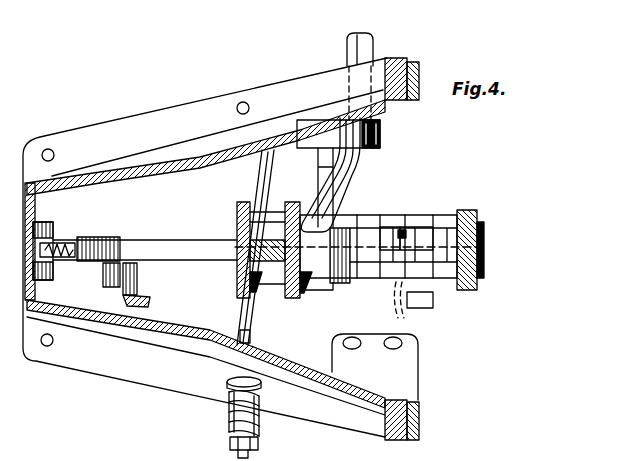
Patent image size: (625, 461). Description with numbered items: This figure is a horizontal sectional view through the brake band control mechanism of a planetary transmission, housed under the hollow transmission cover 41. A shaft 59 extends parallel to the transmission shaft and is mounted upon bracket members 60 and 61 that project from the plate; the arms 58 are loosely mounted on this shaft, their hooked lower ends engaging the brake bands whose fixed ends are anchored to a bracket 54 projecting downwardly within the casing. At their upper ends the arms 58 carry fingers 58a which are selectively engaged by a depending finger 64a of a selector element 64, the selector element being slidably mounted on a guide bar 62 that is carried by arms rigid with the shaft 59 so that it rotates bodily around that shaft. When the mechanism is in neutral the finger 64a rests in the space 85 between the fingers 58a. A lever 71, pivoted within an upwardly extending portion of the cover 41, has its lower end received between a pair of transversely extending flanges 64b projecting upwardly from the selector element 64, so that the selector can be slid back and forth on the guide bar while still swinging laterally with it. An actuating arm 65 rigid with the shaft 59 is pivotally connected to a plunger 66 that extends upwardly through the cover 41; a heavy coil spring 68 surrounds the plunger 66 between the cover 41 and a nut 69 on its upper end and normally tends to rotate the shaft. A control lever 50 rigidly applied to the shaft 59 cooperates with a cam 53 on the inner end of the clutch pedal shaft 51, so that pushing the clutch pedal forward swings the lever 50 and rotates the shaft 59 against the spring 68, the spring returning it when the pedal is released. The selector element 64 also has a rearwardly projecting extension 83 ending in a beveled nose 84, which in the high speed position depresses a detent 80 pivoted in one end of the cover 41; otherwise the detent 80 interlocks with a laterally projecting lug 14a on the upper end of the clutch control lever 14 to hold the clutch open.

The transmission cover 41 is at (190, 143).
The clutch pedal shaft 51 is at (372, 60).
The cam 53 is at (382, 142).
The control lever 50 is at (343, 180).
The lever 71 is at (333, 190).
The bracket member 61 is at (270, 190).
The actuating arm 65 is at (235, 322).
The selector element 64 is at (240, 212).
The depending finger 64a is at (340, 243).
The transversely extending flanges 64b is at (312, 297).
The extension 83 is at (176, 250).
The detent 80 is at (65, 243).
The beveled nose 84 is at (100, 240).
The laterally projecting lug 14a is at (122, 278).
The clutch control lever 14 is at (148, 298).
The bracket member 60 is at (480, 210).
The shaft 59 is at (486, 245).
The fingers 58a is at (427, 224).
The space 85 is at (410, 233).
The guide bar 62 is at (420, 258).
The arms 58 is at (399, 317).
The bracket 54 is at (425, 368).
The plunger 66 is at (227, 420).
The coil spring 68 is at (262, 418).
The nut 69 is at (260, 450).